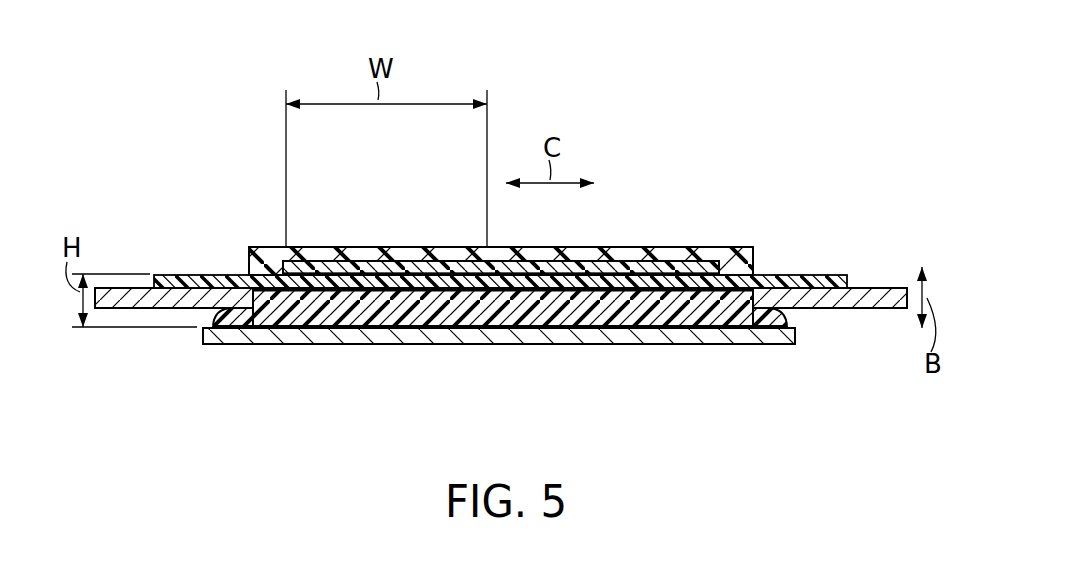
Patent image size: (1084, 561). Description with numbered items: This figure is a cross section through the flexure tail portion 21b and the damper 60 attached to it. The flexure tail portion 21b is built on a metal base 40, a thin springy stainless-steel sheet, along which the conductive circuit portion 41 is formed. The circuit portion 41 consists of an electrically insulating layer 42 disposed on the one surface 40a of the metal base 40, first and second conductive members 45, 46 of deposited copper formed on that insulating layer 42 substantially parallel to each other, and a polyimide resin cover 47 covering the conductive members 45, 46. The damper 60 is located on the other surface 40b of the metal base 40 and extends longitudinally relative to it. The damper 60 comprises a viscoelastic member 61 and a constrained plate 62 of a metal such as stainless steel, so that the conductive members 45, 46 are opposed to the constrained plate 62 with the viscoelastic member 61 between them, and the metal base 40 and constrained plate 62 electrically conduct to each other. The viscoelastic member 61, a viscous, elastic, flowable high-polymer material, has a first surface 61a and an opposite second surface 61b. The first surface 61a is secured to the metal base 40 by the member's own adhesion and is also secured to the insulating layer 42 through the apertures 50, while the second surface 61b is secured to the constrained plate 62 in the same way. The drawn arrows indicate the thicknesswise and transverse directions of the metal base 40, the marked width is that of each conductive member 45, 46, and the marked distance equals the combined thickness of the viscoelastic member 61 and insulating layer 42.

The flexure tail portion 21b is at (704, 92).
The conductive circuit portion 41 is at (247, 236).
The first conductive member 45 is at (387, 258).
The second conductive member 46 is at (632, 266).
The resin cover 47 is at (692, 256).
The electrically insulating layer 42 is at (773, 276).
The viscoelastic member 61 is at (372, 312).
The first surface 61a is at (541, 291).
The constrained plate 62 is at (487, 325).
The second surface 61b is at (568, 330).
The apertures 50 is at (737, 312).
The metal base 40 is at (860, 304).
The one surface 40a is at (810, 276).
The other surface 40b is at (802, 312).
The damper 60 is at (626, 360).